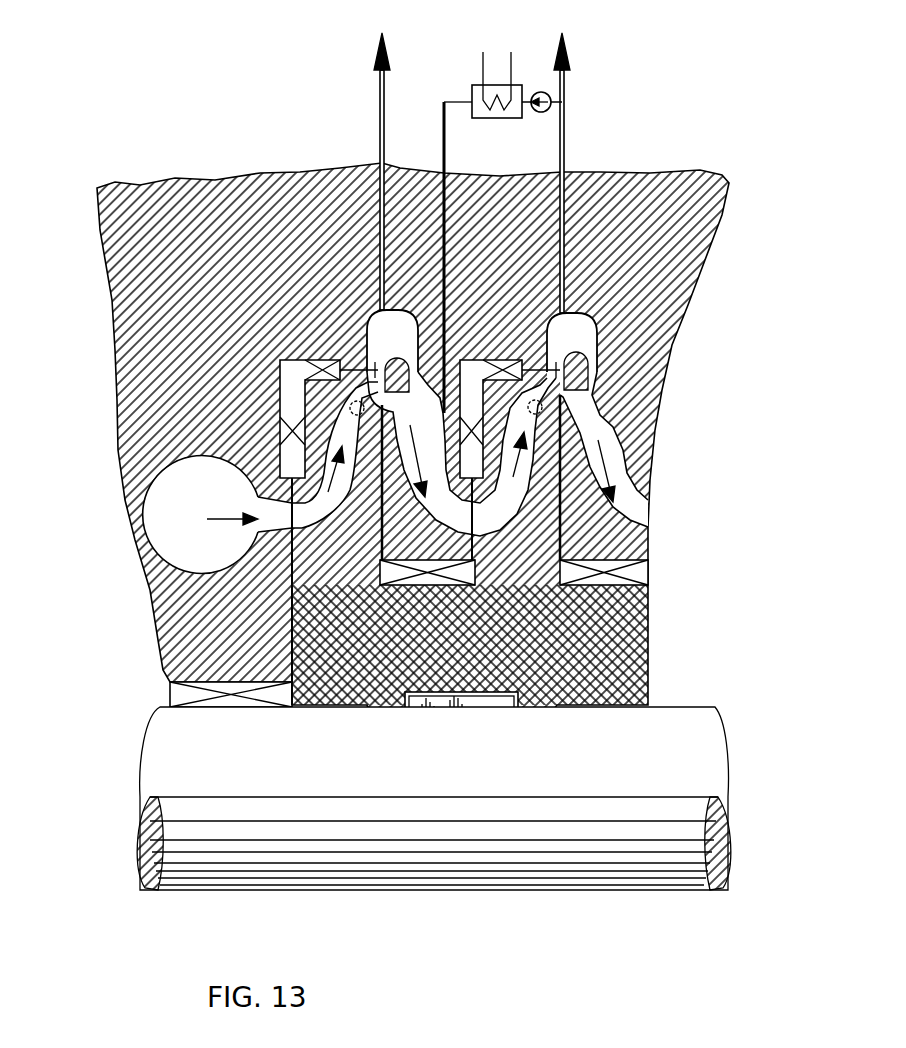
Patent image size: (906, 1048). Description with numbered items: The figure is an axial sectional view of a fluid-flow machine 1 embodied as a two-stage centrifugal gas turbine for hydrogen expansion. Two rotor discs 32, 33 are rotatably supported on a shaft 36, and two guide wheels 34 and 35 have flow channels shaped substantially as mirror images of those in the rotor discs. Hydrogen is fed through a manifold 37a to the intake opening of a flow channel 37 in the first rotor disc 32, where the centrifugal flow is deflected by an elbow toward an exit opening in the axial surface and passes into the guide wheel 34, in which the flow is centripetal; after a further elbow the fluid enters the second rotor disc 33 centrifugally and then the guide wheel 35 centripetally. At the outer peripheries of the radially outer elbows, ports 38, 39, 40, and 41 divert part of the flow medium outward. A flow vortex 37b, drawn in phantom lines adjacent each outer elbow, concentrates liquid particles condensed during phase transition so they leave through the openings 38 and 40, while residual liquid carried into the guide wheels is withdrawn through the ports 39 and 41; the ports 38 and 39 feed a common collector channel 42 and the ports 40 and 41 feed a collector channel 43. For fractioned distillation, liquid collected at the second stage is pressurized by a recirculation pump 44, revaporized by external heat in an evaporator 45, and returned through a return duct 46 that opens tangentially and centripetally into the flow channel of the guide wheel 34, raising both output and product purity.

The fluid-flow machine 1 is at (690, 143).
The first rotor disc 32 is at (323, 583).
The second rotor disc 33 is at (506, 583).
The first guide wheel 34 is at (415, 562).
The second guide wheel 35 is at (593, 560).
The shaft 36 is at (560, 805).
The flow channel 37 is at (355, 446).
The manifold 37a is at (181, 518).
The flow vortex 37b is at (345, 404).
The port 38 is at (352, 365).
The port 39 is at (425, 360).
The port 40 is at (545, 355).
The port 41 is at (597, 372).
The collector channel 42 is at (380, 349).
The collector channel 43 is at (558, 349).
The recirculation pump 44 is at (541, 91).
The evaporator 45 is at (482, 110).
The return duct 46 is at (448, 245).